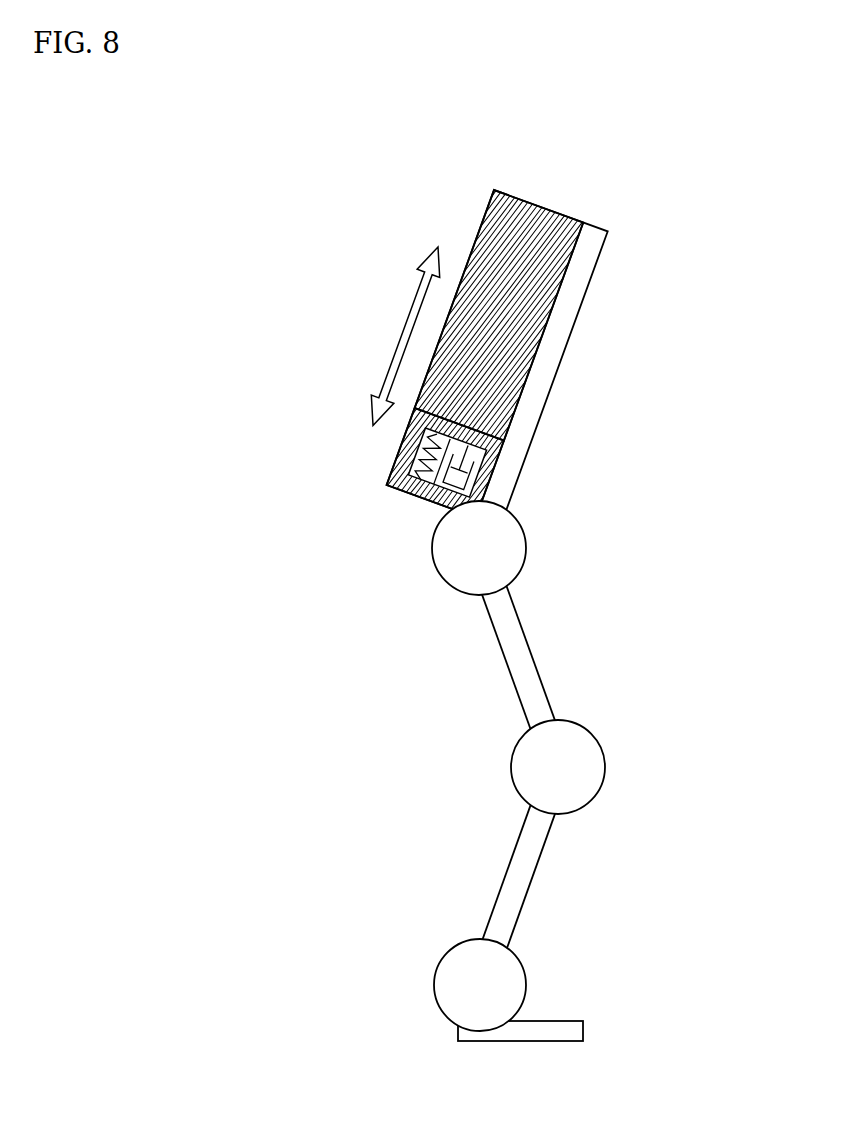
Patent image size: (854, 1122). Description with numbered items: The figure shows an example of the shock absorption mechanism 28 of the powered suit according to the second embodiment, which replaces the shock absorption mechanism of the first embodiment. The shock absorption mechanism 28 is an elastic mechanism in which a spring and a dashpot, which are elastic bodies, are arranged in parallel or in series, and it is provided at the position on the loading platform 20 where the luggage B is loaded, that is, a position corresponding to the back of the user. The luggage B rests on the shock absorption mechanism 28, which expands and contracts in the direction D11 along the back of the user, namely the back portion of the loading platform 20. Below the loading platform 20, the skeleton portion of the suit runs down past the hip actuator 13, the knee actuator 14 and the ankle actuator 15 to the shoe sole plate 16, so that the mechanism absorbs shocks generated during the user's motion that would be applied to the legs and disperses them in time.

The luggage B is at (487, 237).
The direction along the back of the user D11 is at (405, 330).
The loading platform 20 is at (550, 380).
The shock absorption mechanism 28 is at (435, 473).
The hip actuator 13 is at (510, 550).
The knee actuator 14 is at (595, 763).
The ankle actuator 15 is at (512, 985).
The shoe sole plate 16 is at (578, 1032).